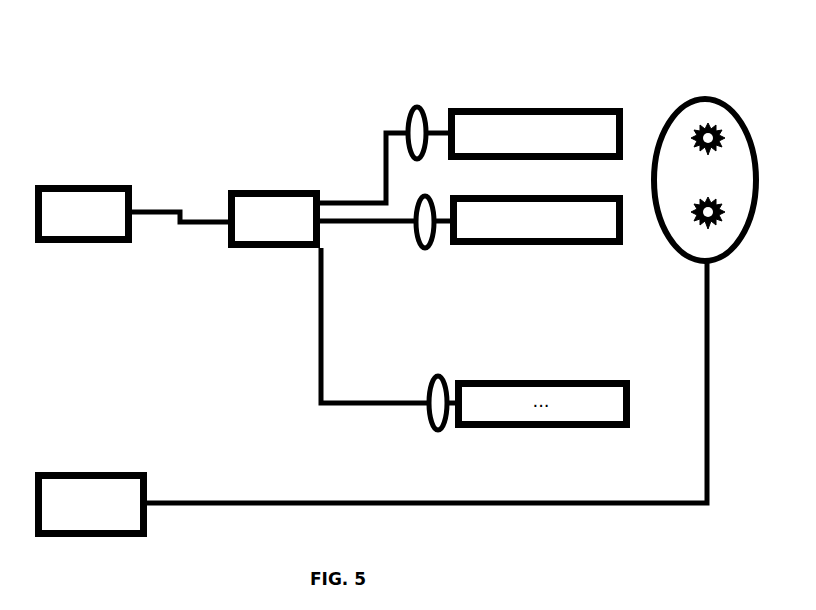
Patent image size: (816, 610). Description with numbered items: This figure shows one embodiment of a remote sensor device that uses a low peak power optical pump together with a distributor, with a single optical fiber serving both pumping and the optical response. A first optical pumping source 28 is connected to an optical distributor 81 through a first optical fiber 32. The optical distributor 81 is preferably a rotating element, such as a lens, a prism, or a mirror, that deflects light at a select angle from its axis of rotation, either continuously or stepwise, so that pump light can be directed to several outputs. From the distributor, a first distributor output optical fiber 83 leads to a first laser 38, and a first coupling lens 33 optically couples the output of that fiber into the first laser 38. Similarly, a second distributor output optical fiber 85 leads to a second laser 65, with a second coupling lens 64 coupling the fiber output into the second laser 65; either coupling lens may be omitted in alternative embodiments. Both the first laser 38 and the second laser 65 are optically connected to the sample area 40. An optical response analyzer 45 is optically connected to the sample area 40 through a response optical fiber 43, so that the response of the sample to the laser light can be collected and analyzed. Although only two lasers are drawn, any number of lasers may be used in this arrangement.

The first optical pumping source 28 is at (84, 214).
The first optical fiber 32 is at (156, 216).
The optical distributor 81 is at (274, 219).
The first distributor output optical fiber 83 is at (384, 132).
The first coupling lens 33 is at (423, 102).
The first laser 38 is at (536, 134).
The second distributor output optical fiber 85 is at (376, 227).
The second coupling lens 64 is at (434, 248).
The second laser 65 is at (537, 220).
The sample area 40 is at (736, 109).
The optical response analyzer 45 is at (91, 505).
The response optical fiber 43 is at (713, 508).